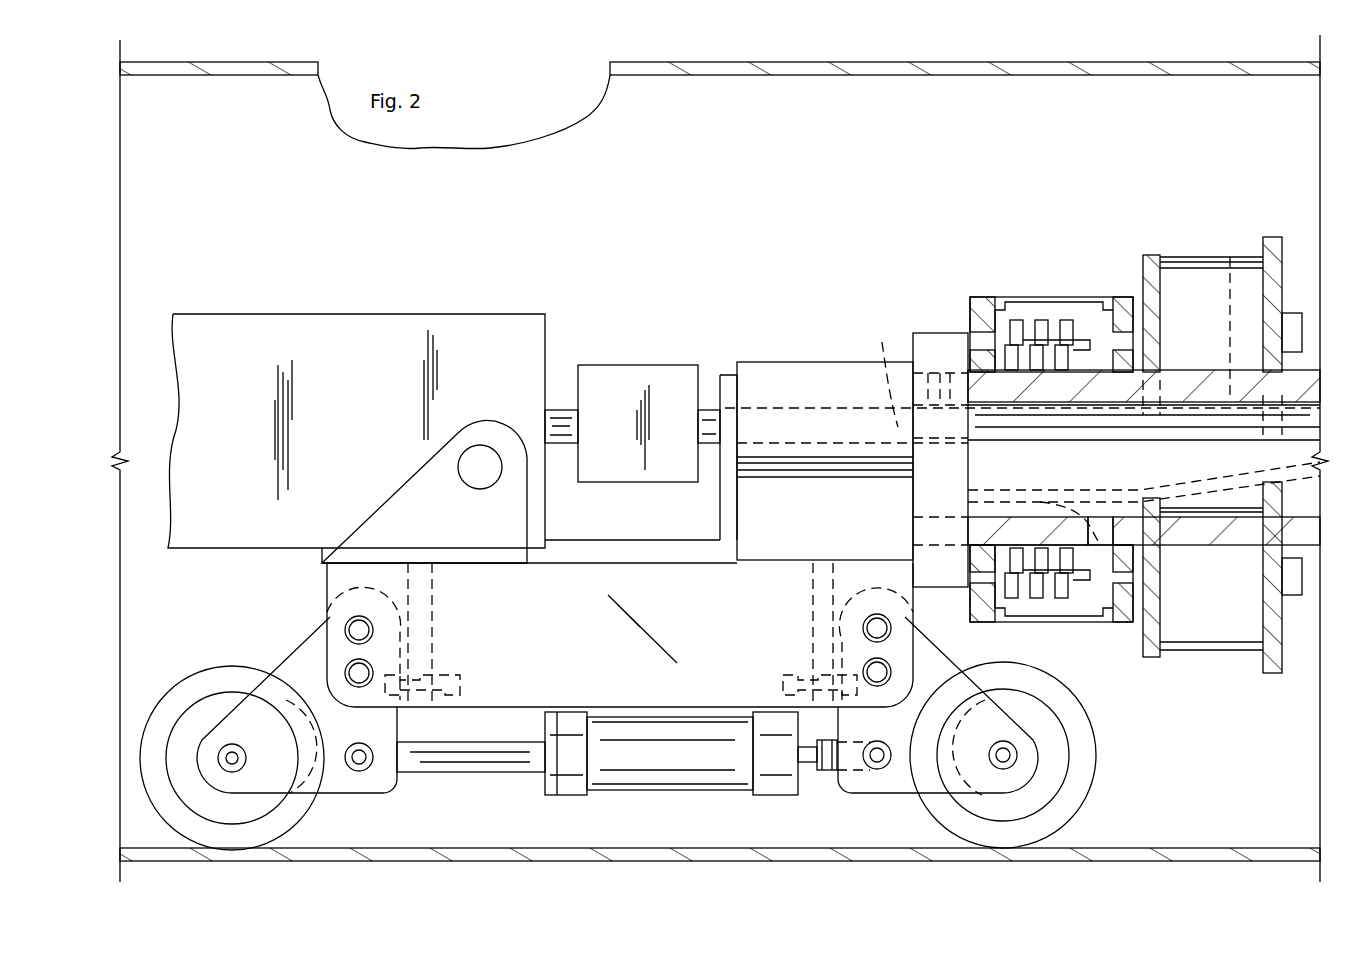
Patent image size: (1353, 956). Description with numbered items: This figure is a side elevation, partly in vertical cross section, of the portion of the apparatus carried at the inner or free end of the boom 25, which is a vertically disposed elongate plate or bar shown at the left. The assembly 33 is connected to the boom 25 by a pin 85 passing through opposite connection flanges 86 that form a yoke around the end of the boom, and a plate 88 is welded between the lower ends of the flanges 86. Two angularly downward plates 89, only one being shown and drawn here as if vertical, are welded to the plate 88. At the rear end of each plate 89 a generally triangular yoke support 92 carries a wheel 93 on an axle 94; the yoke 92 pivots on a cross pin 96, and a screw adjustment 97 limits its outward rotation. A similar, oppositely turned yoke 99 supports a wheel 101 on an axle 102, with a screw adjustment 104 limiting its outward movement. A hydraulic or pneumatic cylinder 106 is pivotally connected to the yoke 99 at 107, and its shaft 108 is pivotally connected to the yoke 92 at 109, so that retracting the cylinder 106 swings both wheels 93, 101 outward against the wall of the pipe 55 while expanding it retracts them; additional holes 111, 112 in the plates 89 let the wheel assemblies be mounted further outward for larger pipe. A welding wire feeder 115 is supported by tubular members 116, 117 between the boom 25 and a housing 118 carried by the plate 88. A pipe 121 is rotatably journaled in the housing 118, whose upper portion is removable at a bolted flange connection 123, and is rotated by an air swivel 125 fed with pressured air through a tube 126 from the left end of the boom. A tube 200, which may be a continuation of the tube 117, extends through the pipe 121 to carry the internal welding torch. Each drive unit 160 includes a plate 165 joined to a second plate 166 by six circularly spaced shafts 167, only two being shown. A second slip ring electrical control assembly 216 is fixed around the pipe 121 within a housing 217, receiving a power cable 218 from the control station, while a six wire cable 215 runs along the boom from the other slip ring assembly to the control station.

The boom 25 is at (387, 314).
The assembly 33 is at (808, 258).
The pipe 55 is at (700, 62).
The pin 85 is at (486, 448).
The connection flanges 86 is at (530, 523).
The plate 88 is at (622, 548).
The plates 89 is at (710, 612).
The yoke support 92 is at (287, 658).
The wheel 93 is at (176, 690).
The axle 94 is at (242, 754).
The cross pin 96 is at (360, 616).
The screw adjustment 97 is at (463, 678).
The yoke 99 is at (898, 790).
The wheel 101 is at (1094, 785).
The axle 102 is at (1018, 755).
The screw adjustment 104 is at (785, 675).
The hydraulic or pneumatic cylinder 106 is at (678, 790).
The pivotal connection 107 is at (872, 770).
The shaft 108 is at (470, 772).
The pivotal connection 109 is at (360, 771).
The hole 111 is at (352, 670).
The hole 112 is at (888, 675).
The welding wire feeder 115 is at (648, 365).
The tubular member 116 is at (560, 410).
The tubular member 117 is at (710, 410).
The housing 118 is at (787, 362).
The tube or pipe 121 is at (1188, 368).
The bolted flange connection 123 is at (855, 478).
The air swivel 125 is at (925, 333).
The tube 126 is at (879, 373).
The drive unit 160 is at (1225, 205).
The plate 165 is at (1270, 237).
The second plate 166 is at (1150, 255).
The shafts 167 is at (1215, 257).
The tube 200 is at (1195, 440).
The six wire cable 215 is at (1092, 492).
The second slip ring electrical control assembly 216 is at (1078, 628).
The housing 217 is at (1040, 297).
The power cable 218 is at (1018, 495).